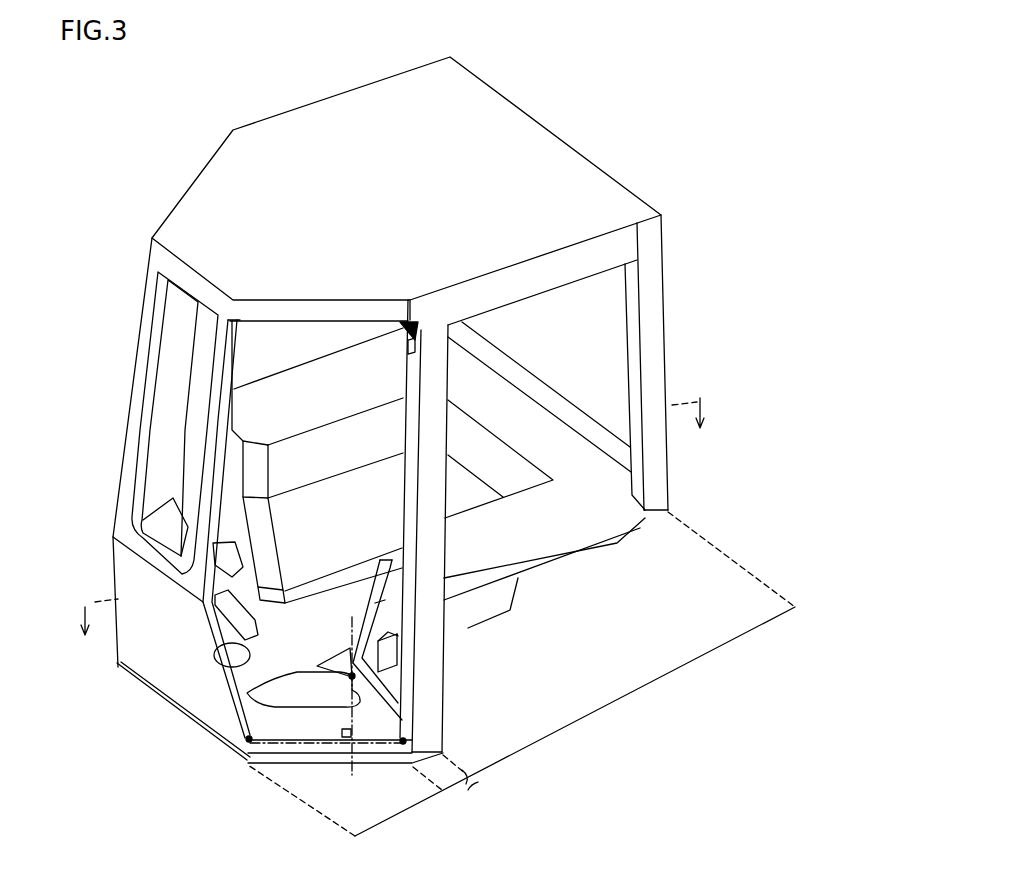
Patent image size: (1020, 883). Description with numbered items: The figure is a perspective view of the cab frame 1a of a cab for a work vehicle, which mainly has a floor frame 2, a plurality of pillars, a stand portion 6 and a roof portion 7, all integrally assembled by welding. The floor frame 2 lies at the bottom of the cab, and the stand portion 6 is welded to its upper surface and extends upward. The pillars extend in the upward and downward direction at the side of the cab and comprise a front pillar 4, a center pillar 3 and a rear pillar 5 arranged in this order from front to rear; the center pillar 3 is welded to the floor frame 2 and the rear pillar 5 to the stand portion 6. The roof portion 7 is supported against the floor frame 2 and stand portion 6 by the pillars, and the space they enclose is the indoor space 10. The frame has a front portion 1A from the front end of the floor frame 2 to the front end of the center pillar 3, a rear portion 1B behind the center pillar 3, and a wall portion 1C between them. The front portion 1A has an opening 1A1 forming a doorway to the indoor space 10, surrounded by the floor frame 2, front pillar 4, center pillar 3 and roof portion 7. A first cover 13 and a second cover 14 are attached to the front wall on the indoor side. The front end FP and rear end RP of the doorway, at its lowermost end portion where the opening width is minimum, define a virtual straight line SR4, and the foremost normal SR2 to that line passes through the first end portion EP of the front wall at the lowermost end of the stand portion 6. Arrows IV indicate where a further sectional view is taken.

The cab frame 1a is at (618, 87).
The front portion 1A is at (337, 800).
The opening (doorway) 1A1 is at (183, 697).
The rear portion 1B is at (575, 674).
The wall portion 1C is at (448, 782).
The floor frame 2 is at (376, 643).
The center pillar 3 is at (190, 440).
The front pillar 4 is at (143, 333).
The rear pillar 5 is at (655, 352).
The stand portion 6 is at (335, 380).
The roof portion 7 is at (378, 125).
The indoor space 10 is at (276, 335).
The first cover 13 is at (393, 688).
The second cover 14 is at (392, 657).
The first end portion EP is at (247, 693).
The front end FP is at (249, 739).
The rear end RP is at (403, 741).
The foremost normal SR2 is at (347, 710).
The virtual straight line SR4 is at (378, 744).
The section line IV is at (390, 506).